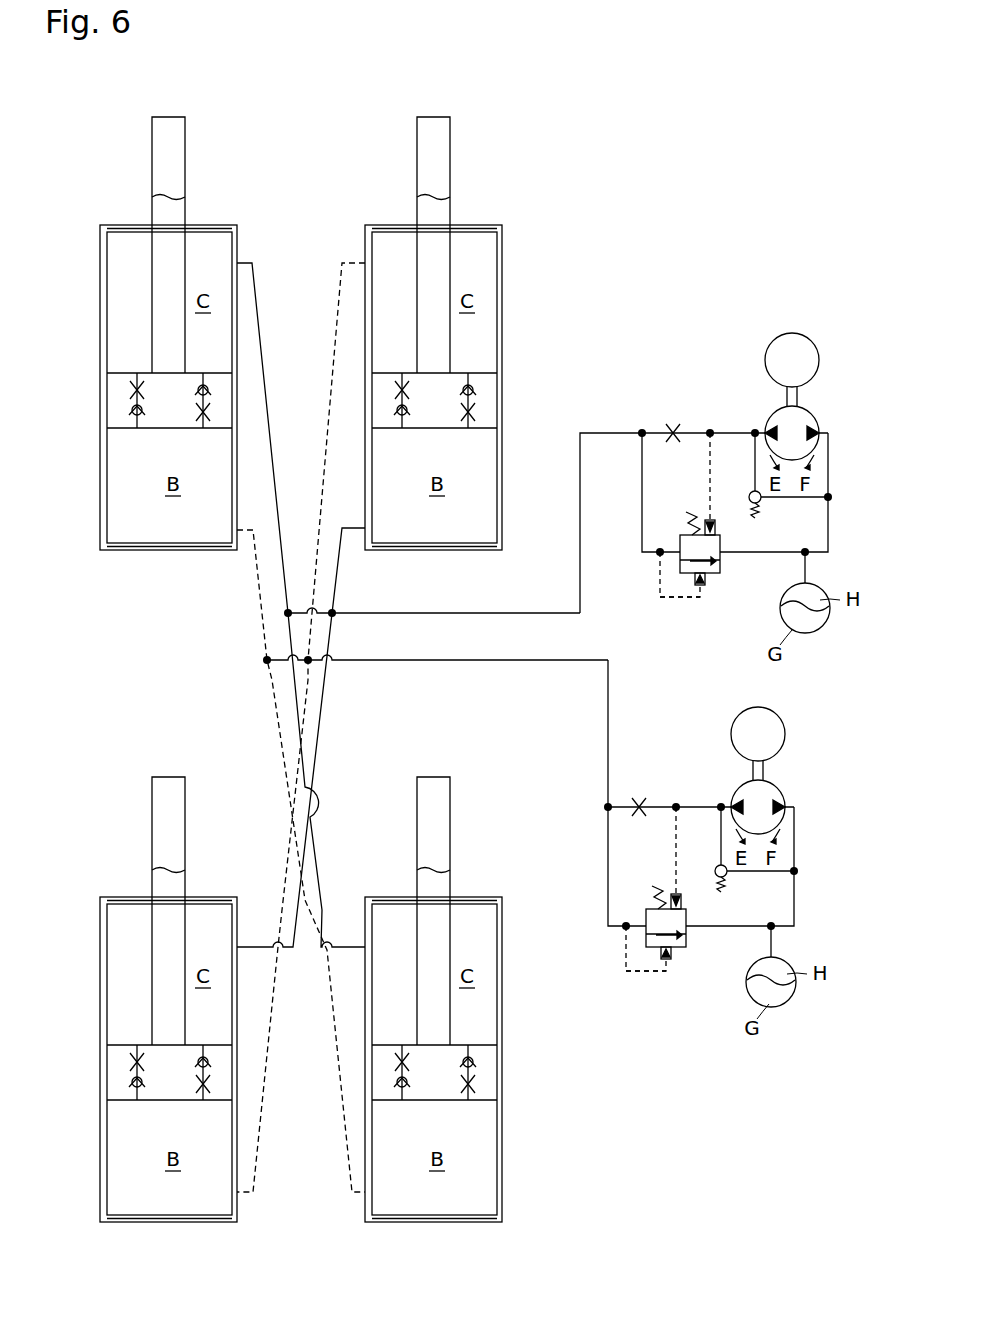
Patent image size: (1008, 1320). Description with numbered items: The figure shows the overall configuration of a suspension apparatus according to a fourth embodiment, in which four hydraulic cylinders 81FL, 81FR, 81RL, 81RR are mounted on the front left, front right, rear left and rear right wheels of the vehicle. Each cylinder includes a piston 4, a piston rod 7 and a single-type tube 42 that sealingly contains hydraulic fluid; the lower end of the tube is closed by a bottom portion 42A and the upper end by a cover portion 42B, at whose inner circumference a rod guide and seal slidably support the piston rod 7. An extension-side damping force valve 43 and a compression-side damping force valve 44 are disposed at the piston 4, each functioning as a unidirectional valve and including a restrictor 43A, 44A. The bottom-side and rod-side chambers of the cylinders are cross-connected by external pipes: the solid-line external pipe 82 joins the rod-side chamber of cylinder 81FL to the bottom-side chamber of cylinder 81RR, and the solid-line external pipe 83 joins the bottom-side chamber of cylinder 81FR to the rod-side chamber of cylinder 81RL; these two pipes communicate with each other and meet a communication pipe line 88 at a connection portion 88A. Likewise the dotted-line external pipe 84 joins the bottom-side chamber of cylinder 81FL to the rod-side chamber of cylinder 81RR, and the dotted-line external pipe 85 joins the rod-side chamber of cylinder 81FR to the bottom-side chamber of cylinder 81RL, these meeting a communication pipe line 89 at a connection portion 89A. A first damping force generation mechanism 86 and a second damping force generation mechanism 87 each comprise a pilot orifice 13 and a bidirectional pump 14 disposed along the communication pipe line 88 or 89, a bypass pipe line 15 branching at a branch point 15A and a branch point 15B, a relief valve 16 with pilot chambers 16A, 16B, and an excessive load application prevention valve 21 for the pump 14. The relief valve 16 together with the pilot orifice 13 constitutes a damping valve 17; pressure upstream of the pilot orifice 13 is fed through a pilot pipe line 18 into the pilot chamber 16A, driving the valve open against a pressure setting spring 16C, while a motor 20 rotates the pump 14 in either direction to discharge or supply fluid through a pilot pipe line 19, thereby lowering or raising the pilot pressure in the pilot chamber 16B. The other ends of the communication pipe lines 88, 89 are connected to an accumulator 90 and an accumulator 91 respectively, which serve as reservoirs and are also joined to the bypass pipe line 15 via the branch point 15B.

The hydraulic cylinder 81FL is at (130, 219).
The hydraulic cylinder 81FR is at (395, 219).
The hydraulic cylinder 81RL is at (130, 891).
The hydraulic cylinder 81RR is at (395, 891).
The piston rod 7 is at (185, 143).
The tube 42 is at (100, 292).
The bottom portion 42A is at (177, 550).
The cover portion 42B is at (193, 225).
The piston 4 is at (160, 415).
The extension-side damping force valve 43 is at (130, 410).
The restrictor 43A is at (130, 390).
The compression-side damping force valve 44 is at (210, 388).
The restrictor 44A is at (212, 412).
The external pipe 82 is at (285, 453).
The external pipe 83 is at (322, 707).
The external pipe 84 is at (278, 725).
The external pipe 85 is at (313, 535).
The connection portion 88A is at (336, 616).
The connection portion 89A is at (265, 658).
The communication pipe line 88 is at (602, 438).
The communication pipe line 89 is at (605, 680).
The first damping force generation mechanism 86 is at (723, 425).
The second damping force generation mechanism 87 is at (690, 800).
The pilot orifice 13 is at (673, 423).
The pump 14 is at (815, 418).
The bypass pipe line 15 is at (640, 530).
The branch point 15A is at (641, 431).
The branch point 15B is at (808, 556).
The relief valve 16 is at (722, 560).
The pilot chamber 16A is at (706, 582).
The pilot chamber 16B is at (717, 530).
The pressure setting spring 16C is at (690, 524).
The damping valve 17 is at (692, 600).
The pilot pipe line 18 is at (658, 584).
The pilot pipe line 19 is at (708, 474).
The motor 20 is at (815, 340).
The excessive load application prevention valve 21 is at (752, 493).
The accumulator 90 is at (815, 625).
The accumulator 91 is at (790, 990).